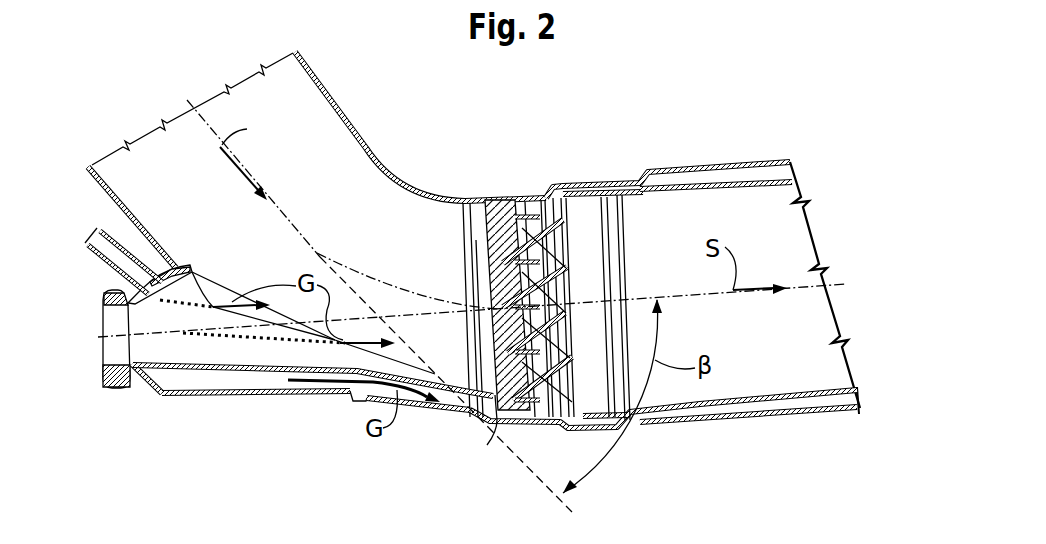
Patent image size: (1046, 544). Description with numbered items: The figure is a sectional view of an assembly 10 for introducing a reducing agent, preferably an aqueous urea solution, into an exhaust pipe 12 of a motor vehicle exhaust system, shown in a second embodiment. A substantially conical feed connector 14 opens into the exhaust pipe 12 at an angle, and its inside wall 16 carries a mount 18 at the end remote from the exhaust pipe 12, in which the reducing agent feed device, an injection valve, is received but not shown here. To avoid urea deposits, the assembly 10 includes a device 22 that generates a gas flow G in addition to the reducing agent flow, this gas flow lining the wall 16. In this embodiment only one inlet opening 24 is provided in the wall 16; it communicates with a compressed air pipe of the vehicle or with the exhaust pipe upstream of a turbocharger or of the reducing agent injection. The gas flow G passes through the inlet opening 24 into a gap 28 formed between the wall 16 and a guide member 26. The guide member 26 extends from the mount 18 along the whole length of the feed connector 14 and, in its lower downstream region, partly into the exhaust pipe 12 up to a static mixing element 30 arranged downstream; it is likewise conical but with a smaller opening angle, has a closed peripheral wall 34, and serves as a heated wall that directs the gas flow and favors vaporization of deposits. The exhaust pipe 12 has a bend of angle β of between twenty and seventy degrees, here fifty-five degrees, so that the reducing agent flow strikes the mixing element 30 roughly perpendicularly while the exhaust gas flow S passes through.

The assembly 10 is at (398, 130).
The exhaust pipe 12 is at (320, 80).
The feed connector 14 is at (160, 373).
The wall 16 is at (243, 400).
The mount 18 is at (113, 383).
The device 22 is at (88, 220).
The inlet opening 24 is at (110, 263).
The guide member 26 is at (193, 387).
The gap 28 is at (182, 267).
The static mixing element 30 is at (478, 429).
The closed peripheral wall 34 is at (312, 378).